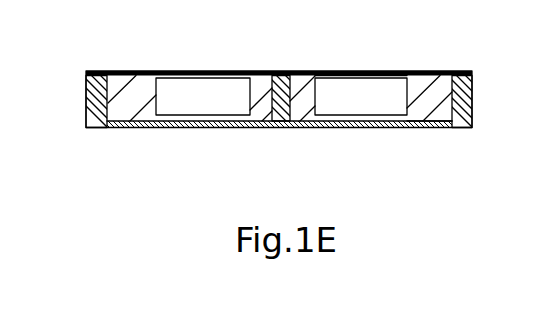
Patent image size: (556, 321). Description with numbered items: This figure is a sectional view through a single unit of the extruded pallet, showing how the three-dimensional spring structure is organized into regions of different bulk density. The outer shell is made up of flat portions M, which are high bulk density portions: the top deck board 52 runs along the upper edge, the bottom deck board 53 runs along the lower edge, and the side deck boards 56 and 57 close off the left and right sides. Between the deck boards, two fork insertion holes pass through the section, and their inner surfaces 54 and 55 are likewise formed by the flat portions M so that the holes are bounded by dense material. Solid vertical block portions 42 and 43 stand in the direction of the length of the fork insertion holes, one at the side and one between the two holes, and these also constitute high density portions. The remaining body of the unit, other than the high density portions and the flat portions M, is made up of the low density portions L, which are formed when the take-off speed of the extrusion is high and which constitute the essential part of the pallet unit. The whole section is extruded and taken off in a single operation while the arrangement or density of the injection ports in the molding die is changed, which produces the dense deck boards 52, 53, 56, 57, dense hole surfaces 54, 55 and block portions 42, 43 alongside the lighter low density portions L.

The vertical block portion 42 is at (93, 73).
The top deck board 52 is at (203, 71).
The flat portions M is at (389, 71).
The side deck board 57 is at (474, 100).
The side deck board 56 is at (86, 99).
The inner surface of fork insertion hole 54 is at (195, 115).
The bottom deck board 53 is at (222, 127).
The vertical block portion 43 is at (298, 127).
The inner surface of fork insertion hole 55 is at (352, 115).
The low density portions L is at (442, 126).